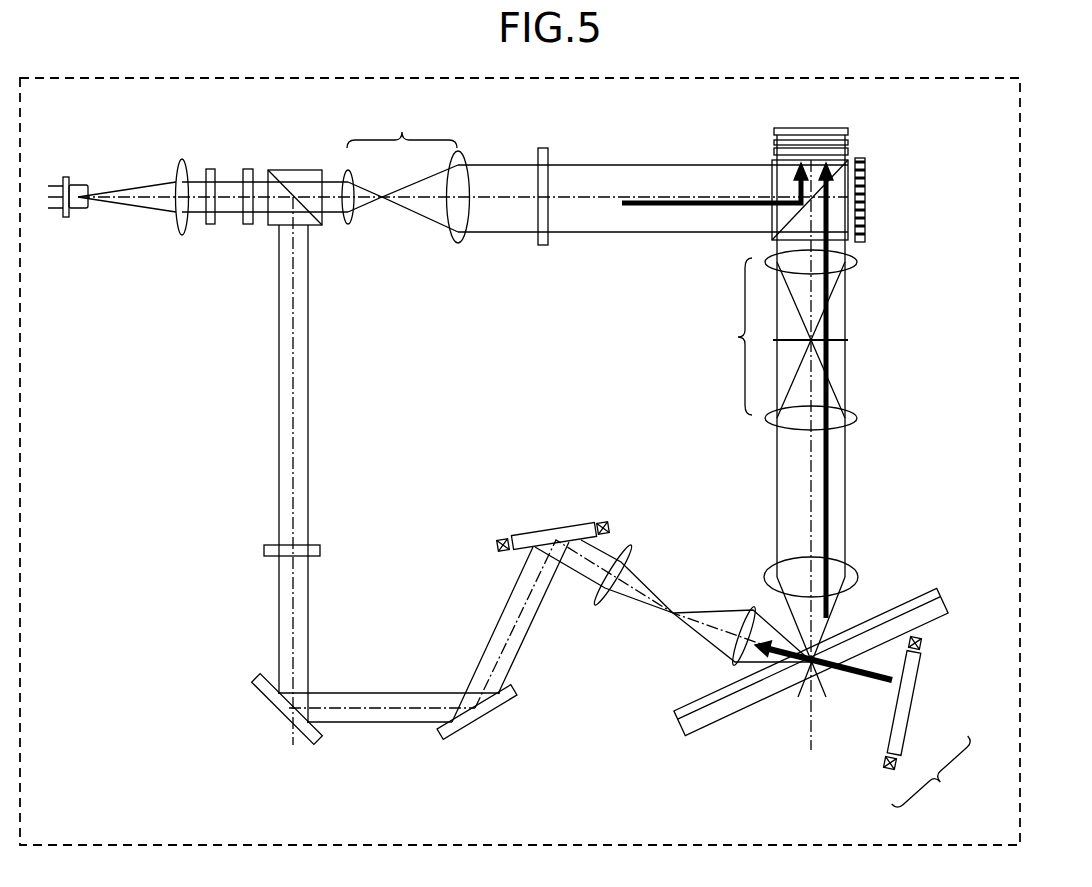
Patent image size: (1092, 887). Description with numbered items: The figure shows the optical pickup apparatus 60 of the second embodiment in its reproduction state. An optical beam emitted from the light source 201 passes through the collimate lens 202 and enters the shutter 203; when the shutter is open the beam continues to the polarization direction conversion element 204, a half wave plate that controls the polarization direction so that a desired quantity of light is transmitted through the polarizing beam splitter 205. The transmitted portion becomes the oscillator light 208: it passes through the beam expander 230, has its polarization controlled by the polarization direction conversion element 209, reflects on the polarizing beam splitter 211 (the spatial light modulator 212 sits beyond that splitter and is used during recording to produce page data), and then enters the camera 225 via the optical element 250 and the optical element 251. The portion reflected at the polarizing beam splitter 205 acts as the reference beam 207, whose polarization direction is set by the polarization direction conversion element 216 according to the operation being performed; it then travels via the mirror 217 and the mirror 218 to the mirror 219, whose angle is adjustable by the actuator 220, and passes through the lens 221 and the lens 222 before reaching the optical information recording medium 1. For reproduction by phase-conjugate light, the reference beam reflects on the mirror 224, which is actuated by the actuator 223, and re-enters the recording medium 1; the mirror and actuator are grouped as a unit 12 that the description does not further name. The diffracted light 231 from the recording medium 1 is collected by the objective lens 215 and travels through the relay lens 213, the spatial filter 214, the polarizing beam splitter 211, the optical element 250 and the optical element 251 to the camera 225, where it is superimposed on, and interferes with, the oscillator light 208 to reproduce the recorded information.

The optical information recording medium 1 is at (686, 728).
The sample holder unit 12 is at (935, 779).
The optical pickup apparatus 60 is at (1020, 356).
The light source 201 is at (80, 181).
The collimate lens 202 is at (180, 157).
The shutter 203 is at (210, 168).
The polarization direction conversion element 204 is at (249, 168).
The polarizing beam splitter 205 is at (269, 222).
The reference beam 207 is at (308, 330).
The oscillator light 208 is at (642, 177).
The polarization direction conversion element 209 is at (547, 148).
The polarizing beam splitter 211 is at (787, 178).
The spatial light modulator 212 is at (866, 216).
The relay lens 213 is at (781, 340).
The spatial filter 214 is at (849, 340).
The objective lens 215 is at (856, 585).
The polarization direction conversion element 216 is at (263, 550).
The mirror 217 is at (283, 716).
The mirror 218 is at (470, 731).
The mirror 219 is at (527, 540).
The actuator 220 is at (497, 545).
The lens 221 is at (600, 600).
The lens 222 is at (742, 607).
The actuator 223 is at (888, 770).
The mirror 224 is at (908, 705).
The camera 225 is at (825, 130).
The beam expander 230 is at (406, 174).
The diffracted light 231 is at (838, 540).
The optical element 250 is at (849, 152).
The optical element 251 is at (773, 143).